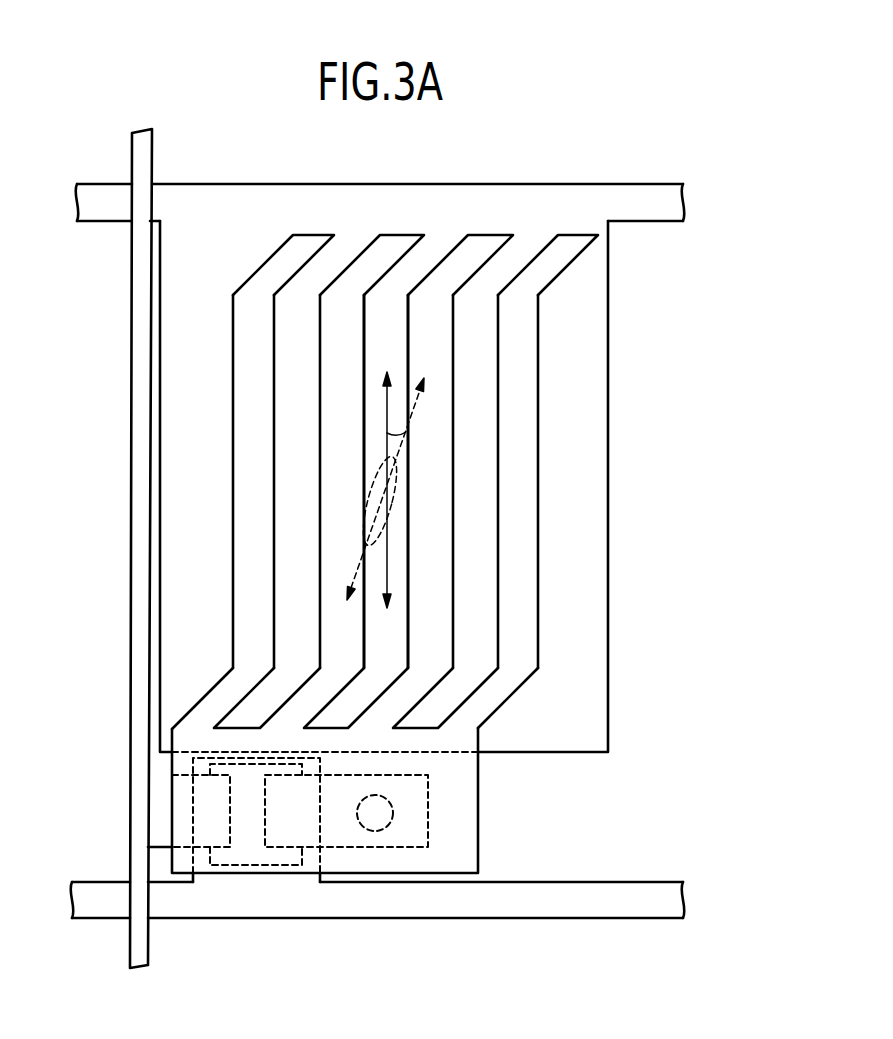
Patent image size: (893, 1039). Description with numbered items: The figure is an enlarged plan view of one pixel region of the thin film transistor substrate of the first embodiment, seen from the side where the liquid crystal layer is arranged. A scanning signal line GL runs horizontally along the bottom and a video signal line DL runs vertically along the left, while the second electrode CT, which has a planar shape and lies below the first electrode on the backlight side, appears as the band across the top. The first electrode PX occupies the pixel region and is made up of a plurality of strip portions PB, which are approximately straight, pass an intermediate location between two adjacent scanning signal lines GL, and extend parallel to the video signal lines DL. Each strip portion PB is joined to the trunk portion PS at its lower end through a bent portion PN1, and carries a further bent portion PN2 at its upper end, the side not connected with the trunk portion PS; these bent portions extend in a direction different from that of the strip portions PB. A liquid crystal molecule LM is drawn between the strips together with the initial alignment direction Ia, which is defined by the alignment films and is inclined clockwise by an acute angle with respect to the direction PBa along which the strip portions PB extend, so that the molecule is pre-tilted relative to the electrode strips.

The second electrode CT is at (209, 197).
The scanning signal line GL is at (373, 906).
The video signal line DL is at (140, 467).
The first electrode PX is at (543, 512).
The strip portion PB is at (430, 362).
The direction along which strip portions extend PBa is at (383, 410).
The bent portion PN2 is at (450, 278).
The bent portion PN1 is at (303, 708).
The trunk portion PS is at (460, 817).
The initial alignment direction Ia is at (415, 400).
The liquid crystal molecule LM is at (398, 497).